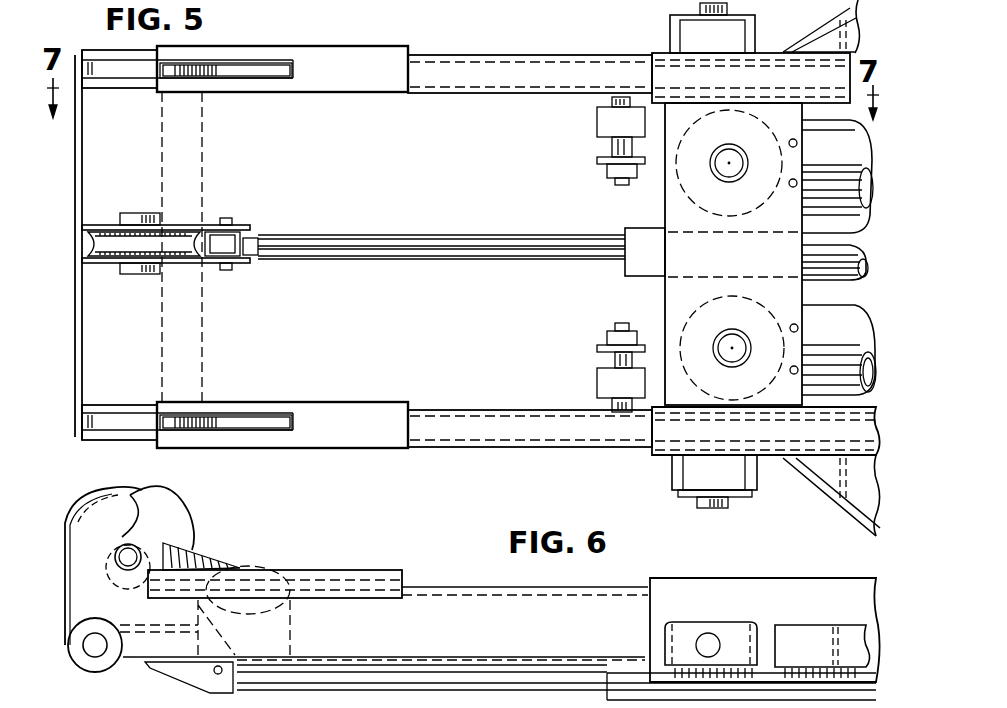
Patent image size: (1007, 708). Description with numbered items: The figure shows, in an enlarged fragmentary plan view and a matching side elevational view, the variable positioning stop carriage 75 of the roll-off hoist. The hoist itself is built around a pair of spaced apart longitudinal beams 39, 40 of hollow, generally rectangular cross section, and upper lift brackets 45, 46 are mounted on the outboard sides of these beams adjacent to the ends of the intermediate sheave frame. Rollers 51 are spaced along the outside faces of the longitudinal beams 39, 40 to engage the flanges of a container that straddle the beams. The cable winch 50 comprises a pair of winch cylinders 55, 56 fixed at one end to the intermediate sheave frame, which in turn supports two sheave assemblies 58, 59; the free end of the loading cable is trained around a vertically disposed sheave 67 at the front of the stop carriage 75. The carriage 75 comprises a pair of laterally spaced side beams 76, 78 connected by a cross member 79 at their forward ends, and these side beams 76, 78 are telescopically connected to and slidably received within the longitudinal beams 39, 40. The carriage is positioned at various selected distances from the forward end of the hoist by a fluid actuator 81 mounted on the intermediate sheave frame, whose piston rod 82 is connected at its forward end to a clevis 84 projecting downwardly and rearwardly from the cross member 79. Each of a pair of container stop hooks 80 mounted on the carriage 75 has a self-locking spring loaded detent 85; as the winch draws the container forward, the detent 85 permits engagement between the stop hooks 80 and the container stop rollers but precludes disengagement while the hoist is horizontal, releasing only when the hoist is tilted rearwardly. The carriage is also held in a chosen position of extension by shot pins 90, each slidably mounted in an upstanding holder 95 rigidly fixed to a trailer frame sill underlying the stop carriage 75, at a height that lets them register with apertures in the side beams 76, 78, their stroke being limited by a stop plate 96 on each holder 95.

In FIG. 5, the longitudinal beam 39 is at (778, 455).
In FIG. 6, the longitudinal beam 39 is at (708, 590).
In FIG. 5, the longitudinal beam 40 is at (762, 78).
In FIG. 5, the upper lift bracket 45 is at (852, 514).
In FIG. 6, the upper lift bracket 45 is at (798, 640).
In FIG. 5, the upper lift bracket 46 is at (821, 26).
In FIG. 5, the cable winch 50 is at (655, 213).
In FIG. 5, the roller 51 is at (690, 38).
In FIG. 5, the winch cylinder 55 is at (845, 318).
In FIG. 5, the winch cylinder 56 is at (840, 198).
In FIG. 5, the sheave assembly 58 is at (680, 292).
In FIG. 5, the sheave assembly 59 is at (660, 193).
In FIG. 5, the sheave 67 is at (112, 247).
In FIG. 6, the sheave 67 is at (172, 532).
In FIG. 5, the stop carriage 75 is at (330, 452).
In FIG. 5, the side beam 76 is at (520, 423).
In FIG. 6, the side beam 76 is at (440, 608).
In FIG. 5, the side beam 78 is at (440, 70).
In FIG. 5, the cross member 79 is at (207, 143).
In FIG. 5, the container stop hook 80 is at (99, 62).
In FIG. 6, the container stop hook 80 is at (132, 485).
In FIG. 5, the fluid actuator 81 is at (822, 280).
In FIG. 5, the piston rod 82 is at (338, 237).
In FIG. 5, the clevis 84 is at (235, 225).
In FIG. 5, the spring loaded detent 85 is at (228, 63).
In FIG. 6, the spring loaded detent 85 is at (212, 568).
In FIG. 5, the shot pin 90 is at (612, 147).
In FIG. 5, the holder 95 is at (600, 121).
In FIG. 5, the stop plate 96 is at (605, 160).